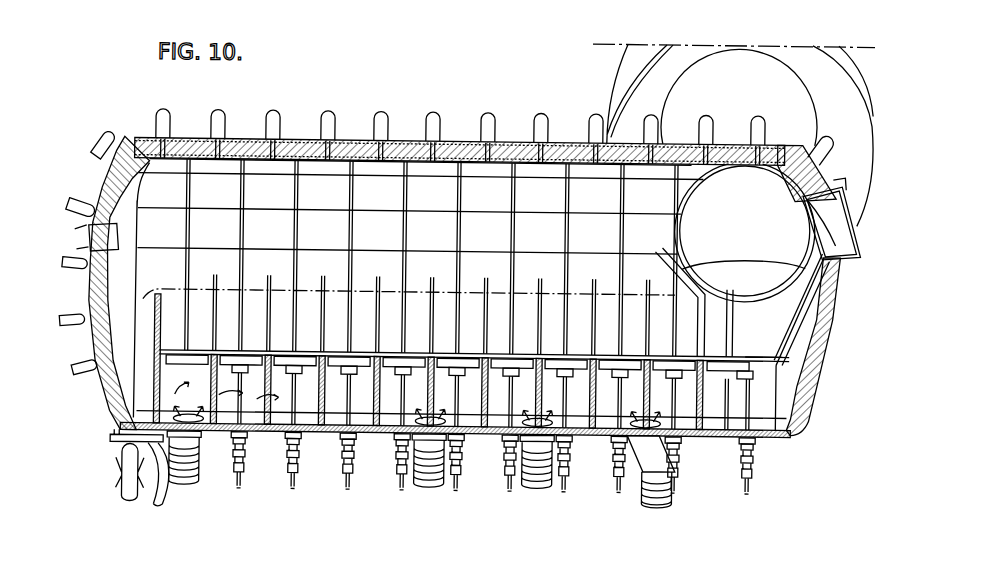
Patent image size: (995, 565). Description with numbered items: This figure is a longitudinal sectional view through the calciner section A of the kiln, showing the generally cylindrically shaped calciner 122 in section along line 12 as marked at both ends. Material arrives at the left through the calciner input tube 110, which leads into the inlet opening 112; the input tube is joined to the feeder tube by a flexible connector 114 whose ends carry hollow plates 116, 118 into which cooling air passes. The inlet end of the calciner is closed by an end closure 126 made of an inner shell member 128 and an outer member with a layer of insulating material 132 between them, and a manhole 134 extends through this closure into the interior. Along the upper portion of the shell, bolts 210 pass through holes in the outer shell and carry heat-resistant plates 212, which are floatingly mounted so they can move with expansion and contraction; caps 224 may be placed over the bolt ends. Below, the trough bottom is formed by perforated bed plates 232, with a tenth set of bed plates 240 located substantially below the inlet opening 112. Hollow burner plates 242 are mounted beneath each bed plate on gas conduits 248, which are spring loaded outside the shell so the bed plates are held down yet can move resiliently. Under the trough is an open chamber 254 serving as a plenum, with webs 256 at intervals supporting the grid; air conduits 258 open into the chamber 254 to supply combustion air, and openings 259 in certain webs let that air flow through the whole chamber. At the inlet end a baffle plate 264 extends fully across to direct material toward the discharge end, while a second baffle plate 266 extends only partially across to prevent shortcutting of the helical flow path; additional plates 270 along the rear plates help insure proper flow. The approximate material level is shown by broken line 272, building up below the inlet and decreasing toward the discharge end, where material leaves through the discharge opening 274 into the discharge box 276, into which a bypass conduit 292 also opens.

The calciner section A is at (348, 133).
The section line 12- 12 is at (81, 299).
The calciner input tube 110 is at (800, 118).
The inlet opening 112 is at (740, 243).
The flexible connector 114 is at (605, 95).
The hollow plate 116 is at (603, 56).
The hollow plate 118 is at (610, 108).
The calciner 122 is at (458, 142).
The end closure 126 is at (819, 390).
The inner shell member 128 is at (808, 361).
The layer of insulating material 132 is at (808, 428).
The manhole 134 is at (836, 196).
The bolts 210 is at (400, 142).
The plates 212 is at (338, 184).
The caps 224 is at (216, 119).
The bed plates 232 is at (346, 353).
The tenth set of bed plates 240 is at (748, 359).
The hollow burner plates 242 is at (446, 377).
The gas conduits 248 is at (298, 497).
The open chamber 254 is at (332, 405).
The webs 256 is at (216, 430).
The air conduits 258 is at (190, 486).
The openings 259 is at (275, 427).
The baffle plate 264 is at (800, 315).
The second baffle plate 266 is at (712, 300).
The additional plates 270 is at (218, 277).
The broken line 272 is at (283, 294).
The discharge opening 274 is at (116, 436).
The discharge box 276 is at (119, 488).
The bypass conduit 292 is at (156, 503).